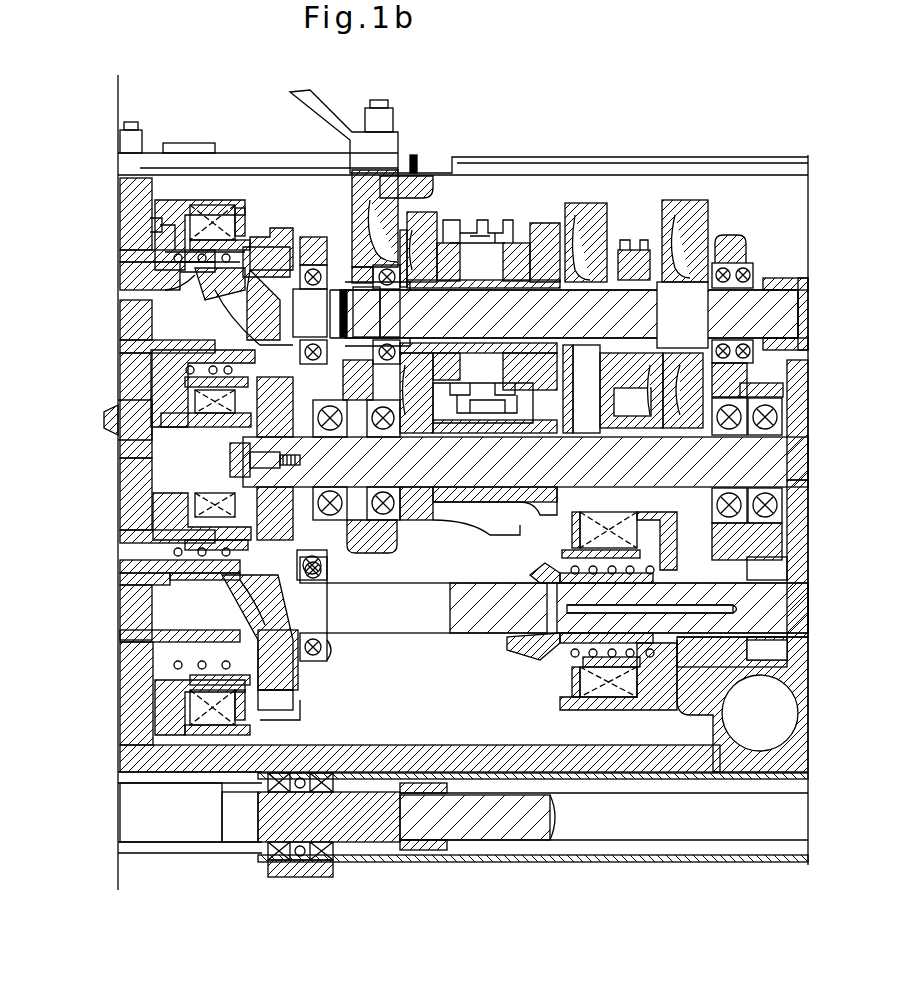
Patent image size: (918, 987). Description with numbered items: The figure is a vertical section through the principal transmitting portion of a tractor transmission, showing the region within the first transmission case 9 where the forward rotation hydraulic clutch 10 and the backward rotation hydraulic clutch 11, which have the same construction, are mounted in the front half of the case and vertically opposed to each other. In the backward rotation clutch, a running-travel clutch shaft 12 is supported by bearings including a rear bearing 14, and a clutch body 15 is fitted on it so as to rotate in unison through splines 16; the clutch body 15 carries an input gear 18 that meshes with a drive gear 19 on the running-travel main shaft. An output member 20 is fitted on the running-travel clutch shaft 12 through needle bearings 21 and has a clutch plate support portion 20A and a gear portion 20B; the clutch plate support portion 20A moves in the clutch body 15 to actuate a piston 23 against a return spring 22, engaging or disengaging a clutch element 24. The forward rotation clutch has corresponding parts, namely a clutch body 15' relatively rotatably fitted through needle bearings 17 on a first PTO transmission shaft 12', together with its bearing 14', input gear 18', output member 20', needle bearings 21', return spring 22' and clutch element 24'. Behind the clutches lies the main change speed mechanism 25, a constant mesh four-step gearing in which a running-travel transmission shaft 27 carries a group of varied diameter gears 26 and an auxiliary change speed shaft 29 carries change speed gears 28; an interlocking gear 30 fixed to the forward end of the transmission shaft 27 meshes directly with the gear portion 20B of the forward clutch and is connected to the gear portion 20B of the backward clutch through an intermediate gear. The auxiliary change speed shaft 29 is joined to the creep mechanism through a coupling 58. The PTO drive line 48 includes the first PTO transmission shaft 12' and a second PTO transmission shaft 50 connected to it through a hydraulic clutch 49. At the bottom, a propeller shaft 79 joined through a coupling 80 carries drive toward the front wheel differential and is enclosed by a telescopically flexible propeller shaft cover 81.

The first transmission case 9 is at (200, 790).
The forward rotation hydraulic clutch 10 is at (237, 770).
The backward rotation hydraulic clutch 11 is at (240, 195).
The running-travel clutch shaft 12 is at (322, 255).
The first PTO transmission shaft 12' is at (567, 593).
The rear bearing 14 is at (350, 289).
The bearing 14' is at (356, 648).
The clutch body 15 is at (200, 178).
The clutch body for forward rotation 15' is at (171, 806).
The splines 16 is at (210, 275).
The needle bearings 17 is at (200, 580).
The input gear 18 is at (142, 220).
The housing wall 18' is at (142, 500).
The drive gear 19 is at (104, 422).
The output member 20 is at (274, 200).
The hub 20' is at (338, 716).
The clutch plate support portion 20A is at (268, 300).
The gear portion 20B is at (330, 430).
The needle bearings 21 is at (346, 312).
The lever 21' is at (257, 632).
The return spring 22 is at (142, 297).
The flange 22' is at (334, 591).
The piston 23 is at (190, 427).
The clutch element 24 is at (217, 177).
The coil 24' is at (270, 712).
The main change speed mechanism 25 is at (558, 206).
The varied diameter gears 26 is at (470, 517).
The running-travel transmission shaft 27 is at (618, 458).
The change speed gears 28 is at (675, 200).
The auxiliary change speed shaft 29 is at (627, 275).
The interlocking gear 30 is at (297, 520).
The PTO drive line 48 is at (447, 643).
The hydraulic clutch 49 is at (558, 690).
The second PTO transmission shaft 50 is at (693, 625).
The coupling 58 is at (782, 283).
The propeller shaft 79 is at (525, 838).
The coupling 80 is at (420, 850).
The propeller shaft cover 81 is at (628, 862).